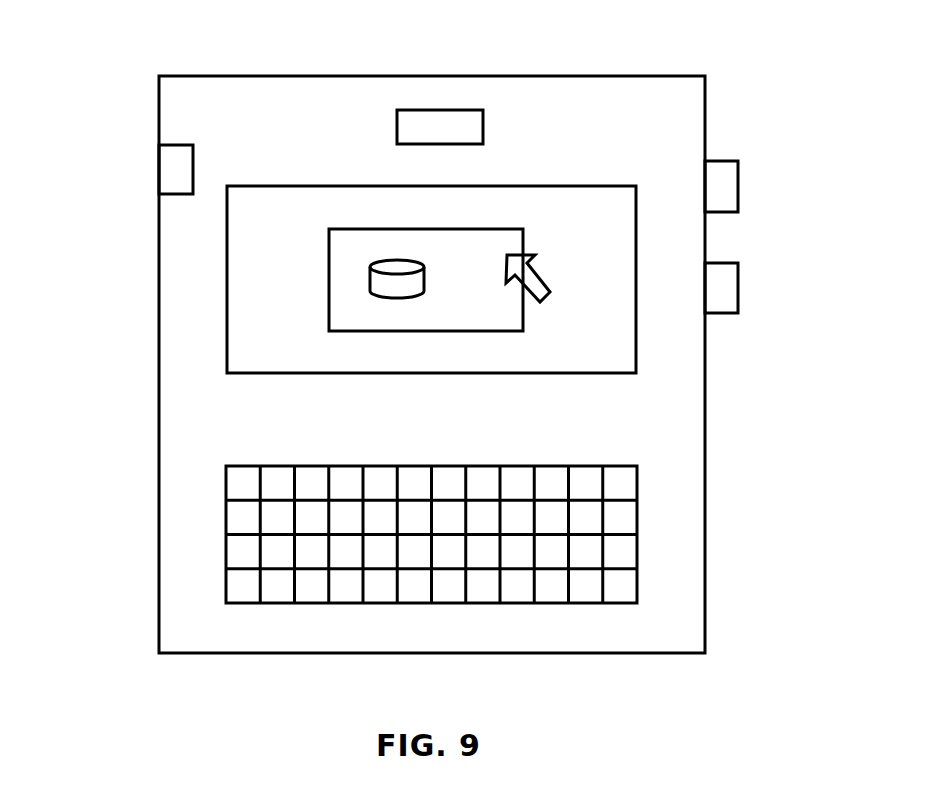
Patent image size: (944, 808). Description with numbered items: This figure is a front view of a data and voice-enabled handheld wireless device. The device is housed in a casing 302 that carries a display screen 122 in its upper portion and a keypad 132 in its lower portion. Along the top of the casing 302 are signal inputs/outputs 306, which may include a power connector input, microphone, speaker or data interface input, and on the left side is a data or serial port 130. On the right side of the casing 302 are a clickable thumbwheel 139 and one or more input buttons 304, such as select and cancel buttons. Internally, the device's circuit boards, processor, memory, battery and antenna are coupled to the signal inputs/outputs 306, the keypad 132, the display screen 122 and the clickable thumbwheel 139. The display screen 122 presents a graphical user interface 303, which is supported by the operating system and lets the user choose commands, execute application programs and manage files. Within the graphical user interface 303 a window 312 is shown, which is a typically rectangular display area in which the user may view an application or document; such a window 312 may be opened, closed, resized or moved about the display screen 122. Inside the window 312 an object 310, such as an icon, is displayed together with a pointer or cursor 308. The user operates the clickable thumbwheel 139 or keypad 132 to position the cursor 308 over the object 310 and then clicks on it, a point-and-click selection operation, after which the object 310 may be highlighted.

The casing 302 is at (295, 110).
The signal inputs/outputs 306 is at (447, 110).
The data or serial port 130 is at (176, 169).
The clickable thumbwheel 139 is at (718, 188).
The input buttons 304 is at (718, 297).
The display screen 122 is at (227, 231).
The graphical user interface (GUI) 303 is at (244, 263).
The window 312 is at (482, 246).
The object 310 is at (370, 280).
The pointer or cursor 308 is at (550, 292).
The keypad 132 is at (638, 516).